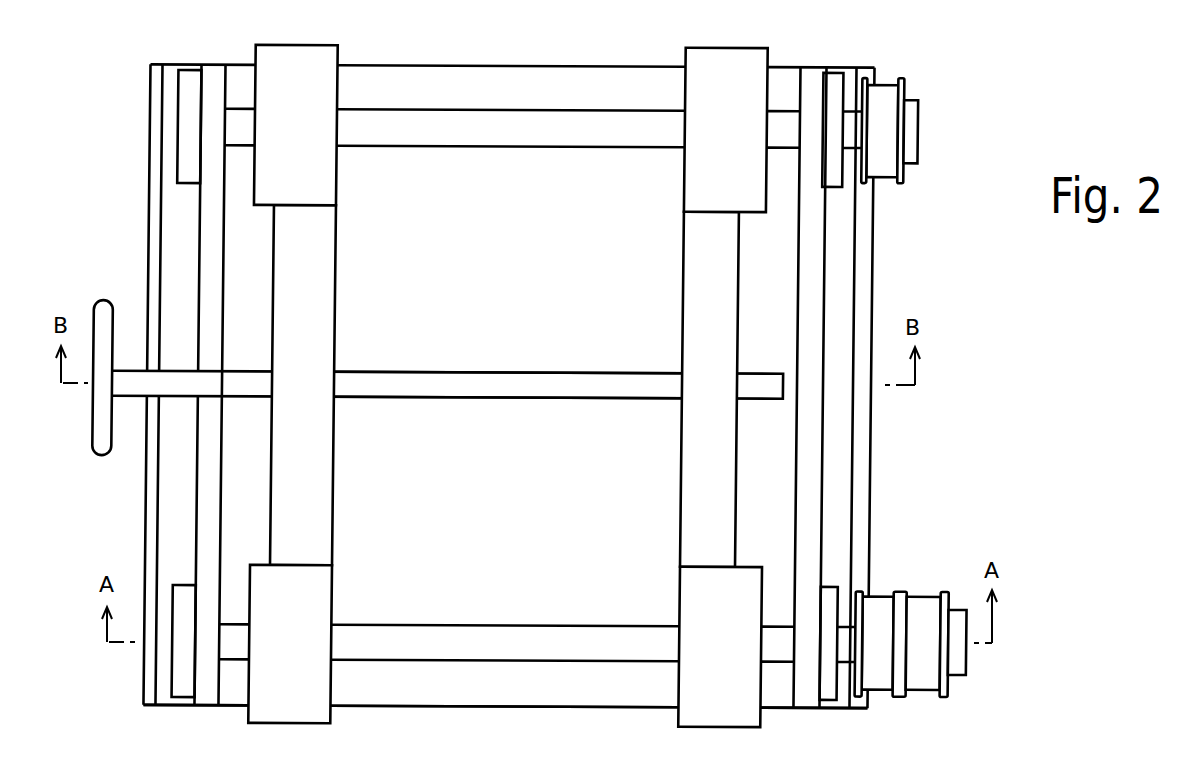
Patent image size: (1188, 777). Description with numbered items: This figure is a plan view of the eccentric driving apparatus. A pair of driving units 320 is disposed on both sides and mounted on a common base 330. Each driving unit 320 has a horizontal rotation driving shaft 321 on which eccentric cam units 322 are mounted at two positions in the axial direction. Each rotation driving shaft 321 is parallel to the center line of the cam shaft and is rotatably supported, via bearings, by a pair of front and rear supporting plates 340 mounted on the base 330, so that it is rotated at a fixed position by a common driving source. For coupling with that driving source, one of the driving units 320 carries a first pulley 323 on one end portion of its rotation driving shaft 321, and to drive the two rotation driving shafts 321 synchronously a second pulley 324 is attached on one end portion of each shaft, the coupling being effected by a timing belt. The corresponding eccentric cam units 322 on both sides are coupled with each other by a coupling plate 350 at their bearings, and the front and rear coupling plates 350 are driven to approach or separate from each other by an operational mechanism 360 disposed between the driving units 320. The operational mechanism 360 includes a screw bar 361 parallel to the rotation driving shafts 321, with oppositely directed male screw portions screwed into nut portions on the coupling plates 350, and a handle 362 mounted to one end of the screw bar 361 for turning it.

The driving unit 320 is at (605, 93).
The rotation driving shaft 321 is at (465, 123).
The eccentric cam unit 322 is at (278, 60).
The first pulley 323 is at (925, 693).
The second pulley 324 is at (883, 98).
The base 330 is at (462, 697).
The supporting plate 340 is at (200, 493).
The coupling plate 350 is at (337, 268).
The operational mechanism 360 is at (505, 355).
The screw bar 361 is at (483, 387).
The handle 362 is at (104, 307).